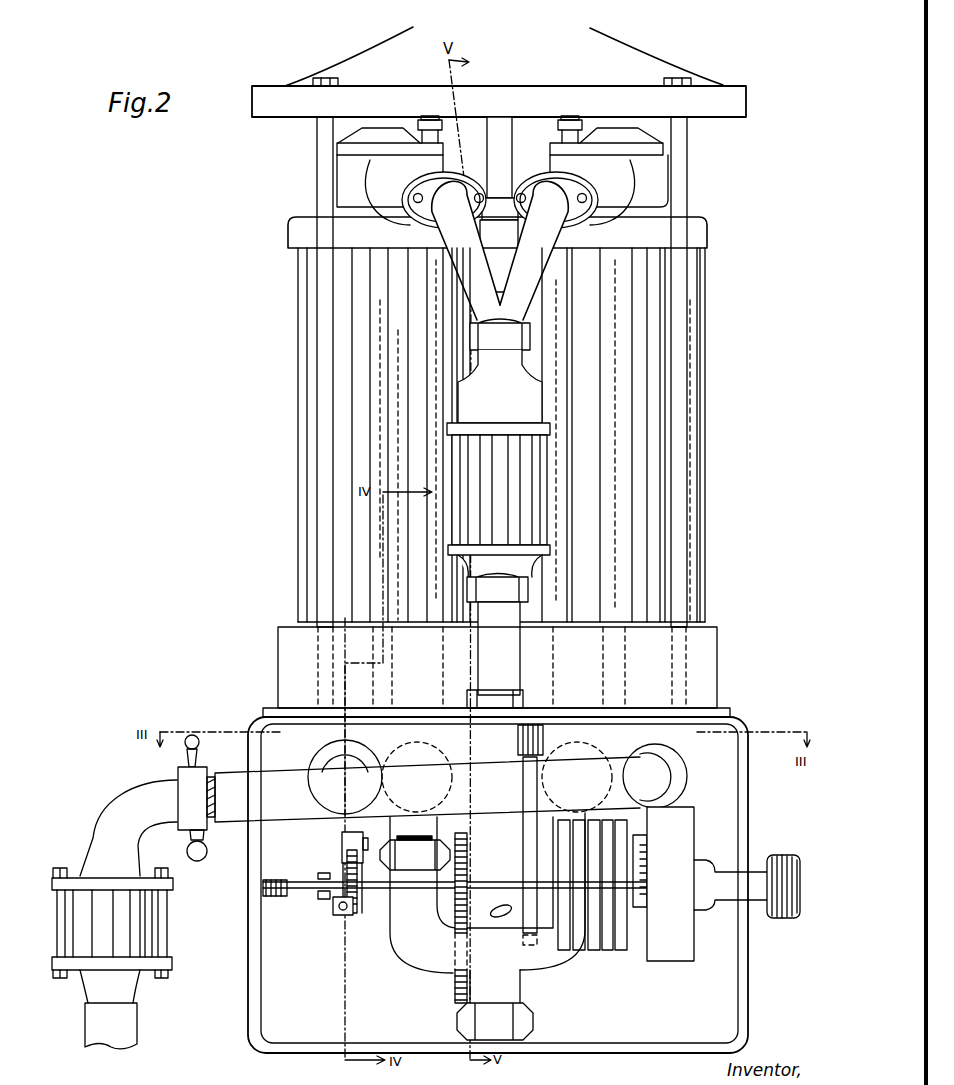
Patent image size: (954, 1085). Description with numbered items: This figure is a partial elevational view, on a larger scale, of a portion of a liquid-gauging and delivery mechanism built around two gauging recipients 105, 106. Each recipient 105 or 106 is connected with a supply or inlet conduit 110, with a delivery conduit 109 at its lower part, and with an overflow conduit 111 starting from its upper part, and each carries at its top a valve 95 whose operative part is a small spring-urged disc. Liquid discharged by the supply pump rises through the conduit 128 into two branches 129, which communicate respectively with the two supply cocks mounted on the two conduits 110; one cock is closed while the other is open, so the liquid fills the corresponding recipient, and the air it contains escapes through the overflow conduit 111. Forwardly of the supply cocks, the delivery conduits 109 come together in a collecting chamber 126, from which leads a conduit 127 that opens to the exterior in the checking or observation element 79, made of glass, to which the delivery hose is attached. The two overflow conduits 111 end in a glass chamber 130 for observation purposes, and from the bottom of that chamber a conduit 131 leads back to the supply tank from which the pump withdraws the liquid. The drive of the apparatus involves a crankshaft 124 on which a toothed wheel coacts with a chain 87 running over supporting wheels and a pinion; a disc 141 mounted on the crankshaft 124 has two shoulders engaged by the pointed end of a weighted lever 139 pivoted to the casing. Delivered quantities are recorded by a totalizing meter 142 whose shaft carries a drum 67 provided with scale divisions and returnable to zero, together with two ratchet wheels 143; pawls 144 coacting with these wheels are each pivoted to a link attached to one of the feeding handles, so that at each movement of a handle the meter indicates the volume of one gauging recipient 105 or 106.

The drum 67 is at (690, 828).
The checking or observation element 79 is at (133, 925).
The chain 87 is at (475, 965).
The valve 95 is at (430, 132).
The recipient 105 is at (620, 320).
The recipient 106 is at (380, 298).
The delivery conduit 109 is at (327, 733).
The supply or inlet conduit 110 is at (427, 733).
The overflow conduit 111 is at (443, 214).
The crankshaft 124 is at (287, 893).
The collecting chamber 126 is at (647, 780).
The conduit 127 is at (237, 793).
The conduit 128 is at (508, 980).
The branch 129 is at (415, 953).
The glass chamber 130 is at (515, 502).
The conduit 131 is at (512, 622).
The lever 139 is at (520, 885).
The disc 141 is at (532, 912).
The totalizing meter 142 is at (617, 950).
The ratchet wheel 143 is at (333, 900).
The pawl 144 is at (340, 843).